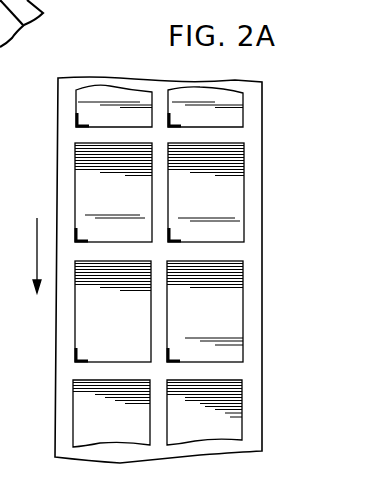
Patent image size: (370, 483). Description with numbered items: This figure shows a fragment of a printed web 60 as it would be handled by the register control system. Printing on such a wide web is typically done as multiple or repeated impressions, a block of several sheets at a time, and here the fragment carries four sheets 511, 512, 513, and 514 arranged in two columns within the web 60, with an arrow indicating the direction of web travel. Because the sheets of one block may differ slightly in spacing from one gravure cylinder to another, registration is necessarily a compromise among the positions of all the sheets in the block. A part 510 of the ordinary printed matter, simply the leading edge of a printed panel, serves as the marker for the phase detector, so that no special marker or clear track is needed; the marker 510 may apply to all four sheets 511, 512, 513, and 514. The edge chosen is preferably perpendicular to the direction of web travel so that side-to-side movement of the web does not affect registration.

The film strip segment 60 is at (63, 372).
The marker 510 is at (83, 357).
The sheet 511 is at (116, 315).
The sheet 512 is at (206, 315).
The sheet 513 is at (113, 202).
The sheet 514 is at (204, 202).